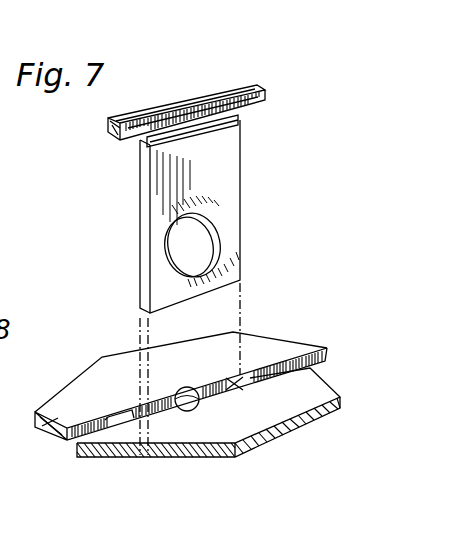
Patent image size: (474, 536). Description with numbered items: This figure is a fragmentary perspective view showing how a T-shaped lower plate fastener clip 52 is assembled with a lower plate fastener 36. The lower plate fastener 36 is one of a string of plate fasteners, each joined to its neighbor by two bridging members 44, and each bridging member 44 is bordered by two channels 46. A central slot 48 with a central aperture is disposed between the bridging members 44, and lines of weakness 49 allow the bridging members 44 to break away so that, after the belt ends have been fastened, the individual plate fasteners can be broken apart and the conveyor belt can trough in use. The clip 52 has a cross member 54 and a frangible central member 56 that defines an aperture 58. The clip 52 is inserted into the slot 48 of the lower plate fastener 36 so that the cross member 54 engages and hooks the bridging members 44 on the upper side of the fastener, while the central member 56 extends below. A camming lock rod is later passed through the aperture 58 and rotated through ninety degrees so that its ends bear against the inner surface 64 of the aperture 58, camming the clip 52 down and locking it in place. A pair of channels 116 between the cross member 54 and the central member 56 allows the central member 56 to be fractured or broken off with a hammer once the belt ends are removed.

The lower plate fastener 36 is at (278, 342).
The bridging member 44 is at (232, 395).
The channel 46 is at (296, 352).
The central slot 48 is at (122, 418).
The line of weakness 49 is at (120, 420).
The T-shaped lower plate fastener clip 52 is at (134, 202).
The cross member 54 is at (237, 95).
The frangible central member 56 is at (225, 173).
The aperture 58 is at (189, 246).
The inner surface 64 is at (223, 242).
The channel 116 is at (240, 132).